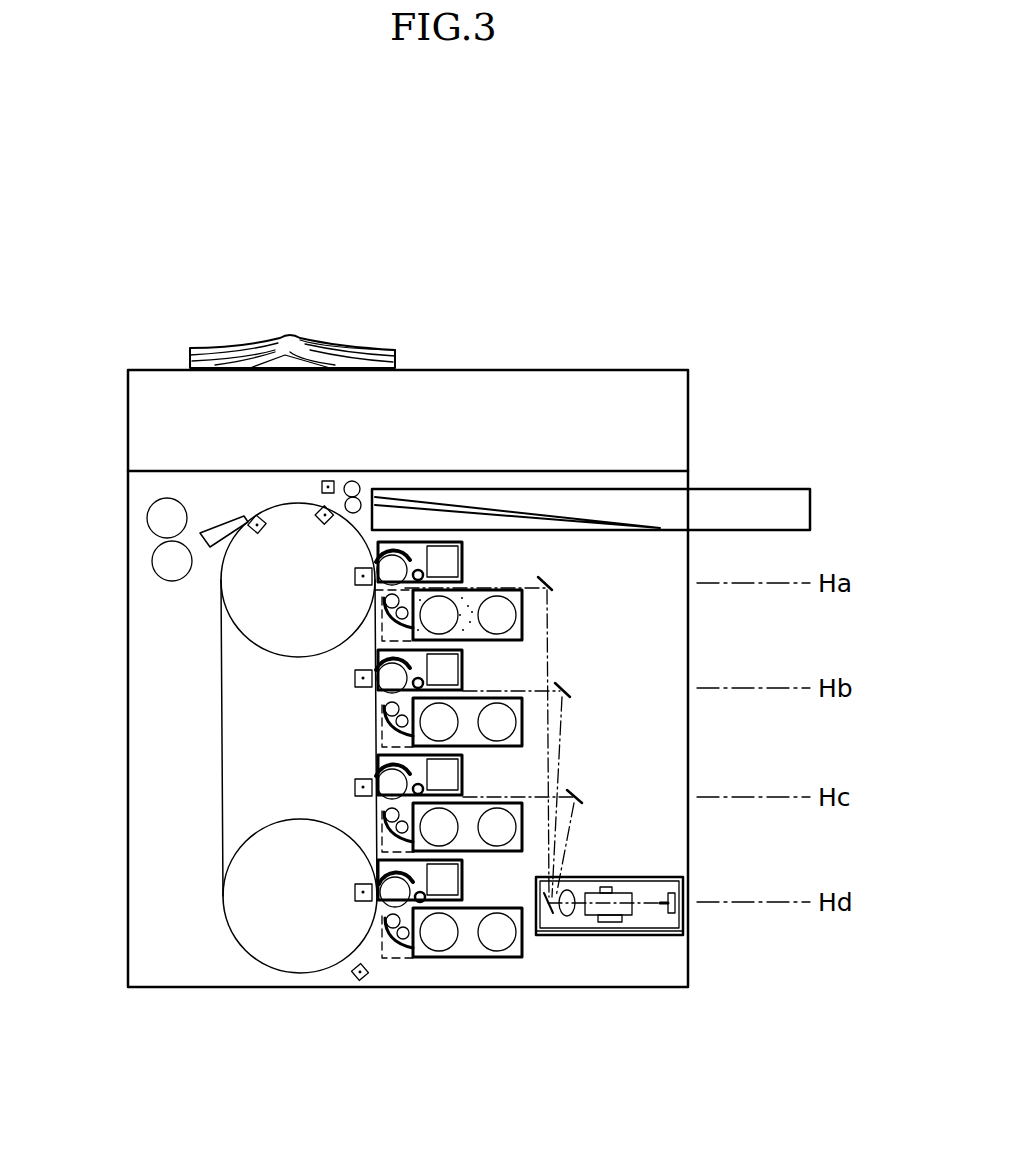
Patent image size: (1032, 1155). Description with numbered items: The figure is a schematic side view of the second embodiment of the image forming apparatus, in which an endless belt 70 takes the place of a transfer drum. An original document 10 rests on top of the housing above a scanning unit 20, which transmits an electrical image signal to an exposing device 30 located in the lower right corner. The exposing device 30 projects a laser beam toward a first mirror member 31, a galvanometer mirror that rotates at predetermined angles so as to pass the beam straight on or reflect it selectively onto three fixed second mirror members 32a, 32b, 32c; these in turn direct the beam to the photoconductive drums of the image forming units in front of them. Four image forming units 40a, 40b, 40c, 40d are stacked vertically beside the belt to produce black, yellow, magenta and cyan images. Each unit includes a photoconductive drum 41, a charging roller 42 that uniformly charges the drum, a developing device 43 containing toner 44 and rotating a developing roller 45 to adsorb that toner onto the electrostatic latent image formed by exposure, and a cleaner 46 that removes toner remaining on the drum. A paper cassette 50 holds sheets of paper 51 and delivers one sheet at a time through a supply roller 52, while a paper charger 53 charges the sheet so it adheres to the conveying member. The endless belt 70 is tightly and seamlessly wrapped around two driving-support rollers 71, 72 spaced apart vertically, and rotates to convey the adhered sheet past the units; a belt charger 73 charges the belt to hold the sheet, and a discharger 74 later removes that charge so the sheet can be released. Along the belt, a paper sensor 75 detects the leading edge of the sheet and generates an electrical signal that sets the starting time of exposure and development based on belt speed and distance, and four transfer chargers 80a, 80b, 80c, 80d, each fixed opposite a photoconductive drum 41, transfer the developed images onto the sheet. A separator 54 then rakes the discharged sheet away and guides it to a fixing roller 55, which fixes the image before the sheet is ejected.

The original document 10 is at (328, 325).
The scanning unit 20 is at (700, 405).
The exposing device 30 is at (655, 970).
The first mirror member 31 is at (548, 918).
The second mirror member 32a is at (556, 590).
The second mirror member 32b is at (572, 697).
The second mirror member 32c is at (584, 803).
The image forming unit 40a is at (438, 558).
The image forming unit 40b is at (372, 738).
The image forming unit 40c is at (372, 828).
The image forming unit 40d is at (412, 968).
The photoconductive drum 41 is at (397, 560).
The charging roller 42 is at (422, 571).
The developing device 43 is at (523, 629).
The toner 44 is at (470, 625).
The developing roller 45 is at (385, 598).
The cleaner 46 is at (465, 560).
The paper cassette 50 is at (822, 507).
The sheet of paper 51 is at (540, 510).
The supply roller 52 is at (357, 482).
The paper charger 53 is at (328, 480).
The separator 54 is at (225, 528).
The fixing roller 55 is at (160, 519).
The endless belt 70 is at (264, 738).
The driving-support roller 71 is at (240, 635).
The driving-support roller 72 is at (240, 847).
The belt charger 73 is at (320, 512).
The discharger 74 is at (266, 518).
The paper sensor 75 is at (352, 980).
The transfer charger 80a is at (354, 574).
The transfer charger 80b is at (354, 682).
The transfer charger 80c is at (354, 788).
The transfer charger 80d is at (354, 893).